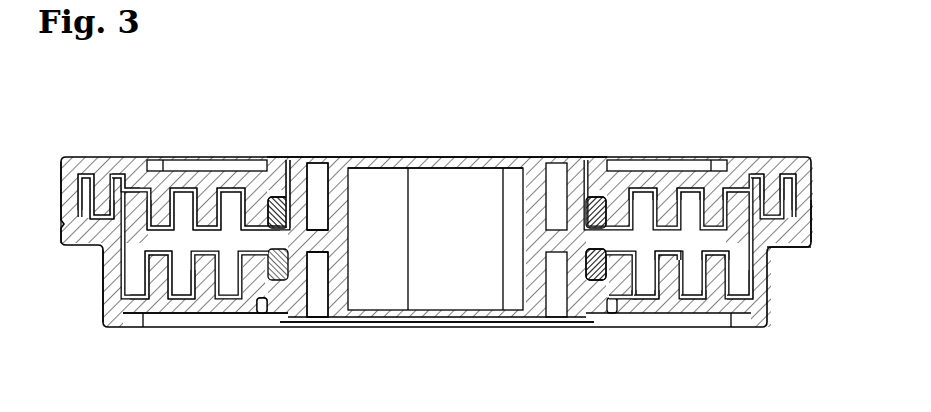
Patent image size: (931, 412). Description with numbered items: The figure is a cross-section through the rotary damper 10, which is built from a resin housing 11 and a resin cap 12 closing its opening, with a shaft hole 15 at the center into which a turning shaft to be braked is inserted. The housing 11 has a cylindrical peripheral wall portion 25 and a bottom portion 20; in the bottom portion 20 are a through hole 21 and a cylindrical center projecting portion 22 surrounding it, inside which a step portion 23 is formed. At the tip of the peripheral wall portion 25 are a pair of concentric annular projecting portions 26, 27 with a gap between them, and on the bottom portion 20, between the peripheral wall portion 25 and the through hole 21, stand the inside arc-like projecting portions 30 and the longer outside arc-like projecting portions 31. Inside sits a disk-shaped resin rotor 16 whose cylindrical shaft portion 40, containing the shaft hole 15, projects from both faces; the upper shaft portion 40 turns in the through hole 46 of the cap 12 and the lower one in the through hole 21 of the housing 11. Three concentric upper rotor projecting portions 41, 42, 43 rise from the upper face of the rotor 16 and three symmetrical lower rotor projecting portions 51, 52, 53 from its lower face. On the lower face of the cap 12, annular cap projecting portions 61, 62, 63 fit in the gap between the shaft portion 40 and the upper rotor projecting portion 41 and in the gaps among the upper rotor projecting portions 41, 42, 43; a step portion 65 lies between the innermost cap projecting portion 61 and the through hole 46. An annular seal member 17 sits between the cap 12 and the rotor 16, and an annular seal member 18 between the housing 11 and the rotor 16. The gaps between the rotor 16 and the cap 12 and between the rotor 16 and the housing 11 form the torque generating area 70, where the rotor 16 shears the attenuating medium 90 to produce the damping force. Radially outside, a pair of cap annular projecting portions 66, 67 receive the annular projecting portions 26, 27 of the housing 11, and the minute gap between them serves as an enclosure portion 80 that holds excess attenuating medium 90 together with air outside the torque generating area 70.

The damper 10 is at (88, 103).
The housing 11 is at (61, 222).
The cap 12 is at (64, 157).
The shaft hole 15 is at (356, 160).
The rotor 16 is at (147, 188).
The annular seal member 17 is at (312, 205).
The annular seal member 18 is at (312, 265).
The bottom portion 20 is at (276, 326).
The through hole 21 is at (298, 324).
The center projecting portion 22 is at (318, 237).
The step portion 23 is at (262, 312).
The peripheral wall portion 25 is at (103, 303).
The annular projecting portion 26 is at (760, 178).
The annular projecting portion 27 is at (790, 178).
The inside arc-like projecting portion 30 is at (192, 297).
The outside arc-like projecting portion 31 is at (140, 297).
The shaft portion 40 is at (594, 175).
The upper rotor projecting portion 41 is at (638, 190).
The upper rotor projecting portion 42 is at (680, 190).
The upper rotor projecting portion 43 is at (733, 190).
The through hole 46 is at (297, 163).
The lower rotor projecting portion 51 is at (655, 300).
The lower rotor projecting portion 52 is at (704, 300).
The lower rotor projecting portion 53 is at (748, 300).
The cap projecting portion 61 is at (624, 300).
The cap projecting portion 62 is at (672, 300).
The cap projecting portion 63 is at (716, 300).
The step portion 65 is at (276, 200).
The cap annular projecting portion 66 is at (776, 249).
The cap annular projecting portion 67 is at (808, 240).
The torque generating area 70 is at (232, 190).
The enclosure portion 80 is at (88, 178).
The attenuating medium 90 is at (114, 176).